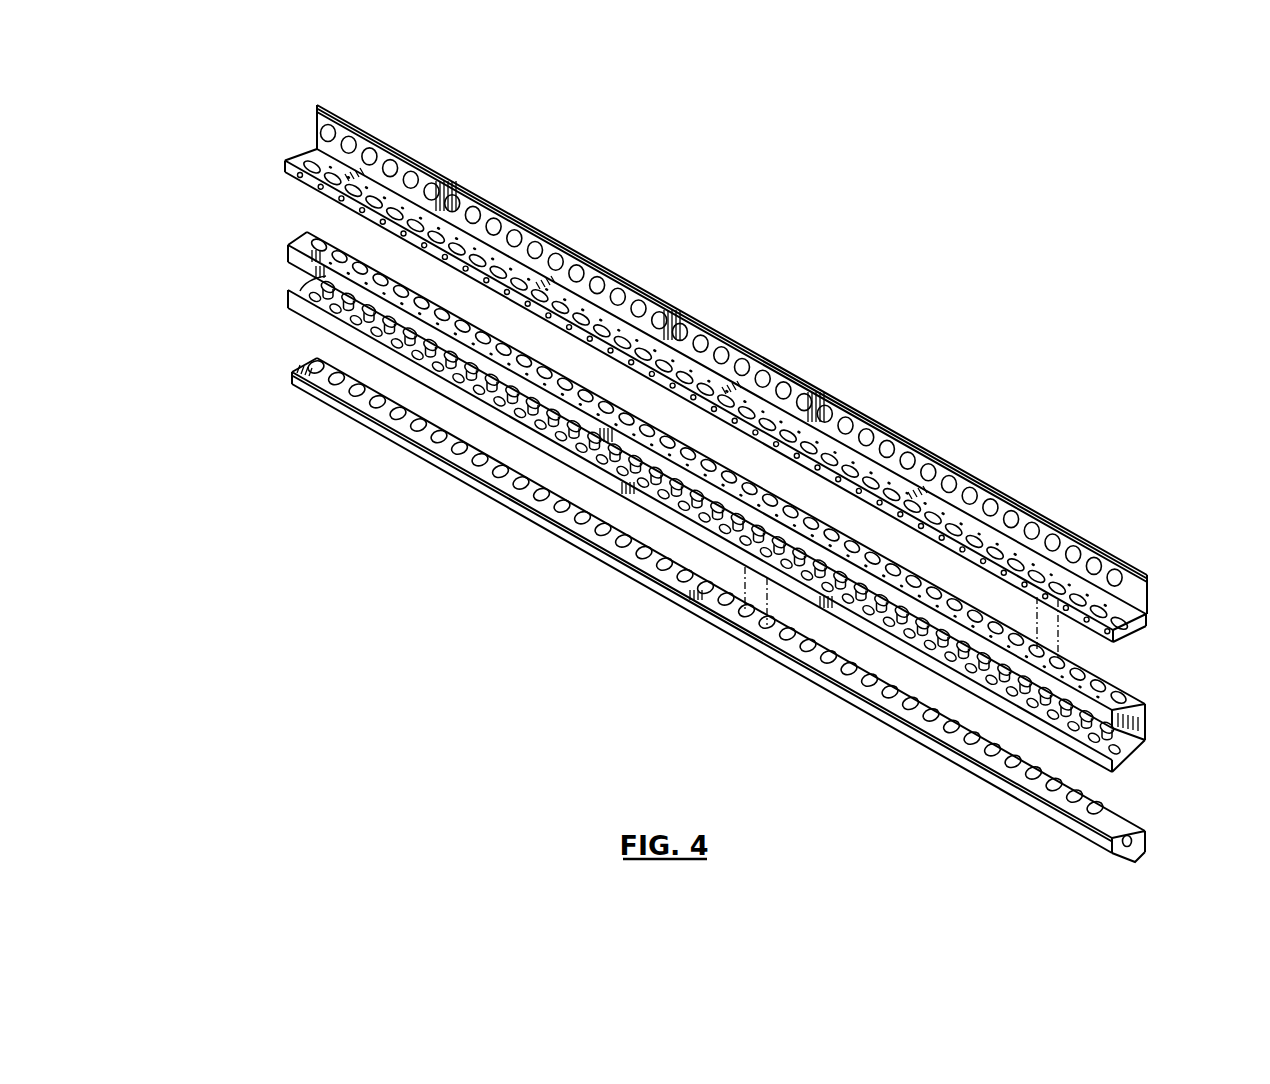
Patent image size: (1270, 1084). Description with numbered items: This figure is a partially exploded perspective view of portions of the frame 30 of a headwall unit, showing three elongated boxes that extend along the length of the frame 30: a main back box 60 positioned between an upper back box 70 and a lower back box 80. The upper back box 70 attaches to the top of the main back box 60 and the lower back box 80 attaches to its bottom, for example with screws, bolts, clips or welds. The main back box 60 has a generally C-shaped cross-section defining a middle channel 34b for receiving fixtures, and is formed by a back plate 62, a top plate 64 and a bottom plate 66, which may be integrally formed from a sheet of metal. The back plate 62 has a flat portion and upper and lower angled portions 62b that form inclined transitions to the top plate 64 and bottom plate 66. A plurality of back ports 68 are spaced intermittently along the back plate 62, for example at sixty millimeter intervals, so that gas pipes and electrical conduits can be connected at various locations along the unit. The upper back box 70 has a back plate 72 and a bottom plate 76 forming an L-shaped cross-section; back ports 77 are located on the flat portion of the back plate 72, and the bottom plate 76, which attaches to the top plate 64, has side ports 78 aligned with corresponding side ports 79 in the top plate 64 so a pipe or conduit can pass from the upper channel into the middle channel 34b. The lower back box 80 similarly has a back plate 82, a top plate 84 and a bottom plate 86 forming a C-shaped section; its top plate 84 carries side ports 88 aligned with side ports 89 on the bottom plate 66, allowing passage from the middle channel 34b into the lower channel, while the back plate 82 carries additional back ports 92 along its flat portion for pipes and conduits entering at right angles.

The frame 30 is at (799, 253).
The middle channel 34b is at (303, 280).
The main back box 60 is at (261, 236).
The back plate 62 is at (1140, 718).
The angled portions 62b is at (1143, 747).
The top plate 64 is at (1118, 685).
The bottom plate 66 is at (1143, 767).
The back ports 68 is at (1092, 737).
The upper back box 70 is at (288, 128).
The back plate 72 is at (1150, 597).
The bottom plate 76 is at (1127, 640).
The back ports 77 is at (1107, 573).
The side ports 78 is at (1058, 576).
The side ports 79 is at (1067, 662).
The lower back box 80 is at (273, 352).
The back plate 82 is at (1147, 840).
The top plate 84 is at (1115, 822).
The bottom plate 86 is at (1138, 853).
The side ports 88 is at (745, 610).
The side ports 89 is at (740, 546).
The back ports 92 is at (1120, 856).